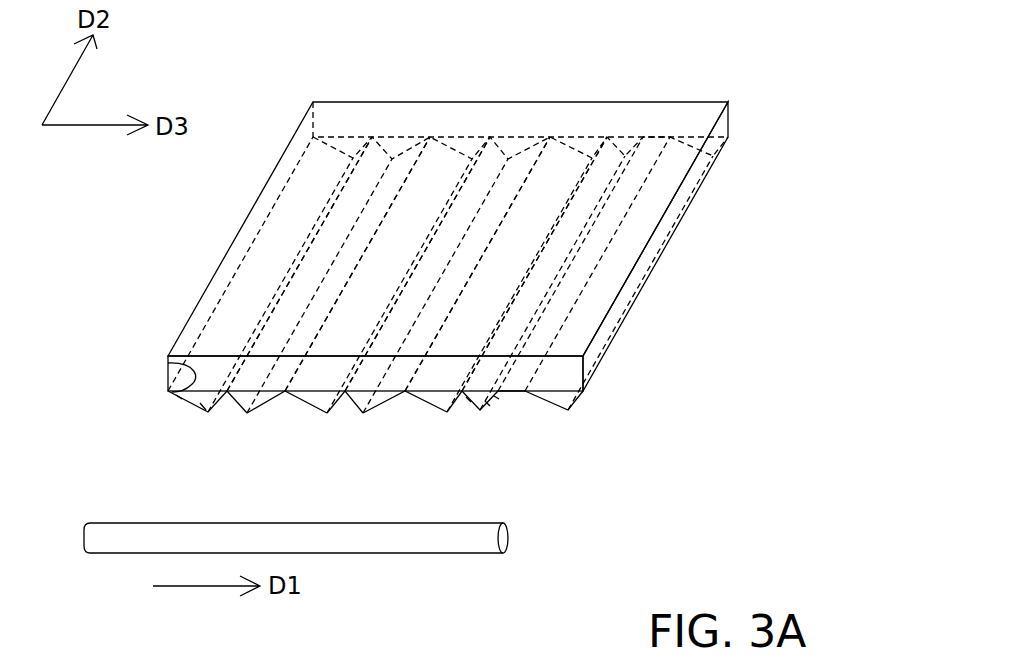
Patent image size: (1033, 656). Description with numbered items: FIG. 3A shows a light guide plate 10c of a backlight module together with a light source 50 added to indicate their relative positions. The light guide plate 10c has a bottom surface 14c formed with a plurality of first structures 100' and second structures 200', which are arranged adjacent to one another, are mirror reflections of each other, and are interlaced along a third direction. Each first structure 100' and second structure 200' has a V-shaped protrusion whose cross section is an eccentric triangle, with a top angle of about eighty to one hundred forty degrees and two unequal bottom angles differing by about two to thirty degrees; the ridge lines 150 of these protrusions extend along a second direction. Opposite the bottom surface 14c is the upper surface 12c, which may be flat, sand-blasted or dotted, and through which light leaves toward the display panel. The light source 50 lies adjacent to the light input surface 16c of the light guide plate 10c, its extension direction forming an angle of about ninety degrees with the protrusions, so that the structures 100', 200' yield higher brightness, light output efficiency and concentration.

The light guide plate 10c is at (472, 239).
The upper surface 12c is at (643, 123).
The bottom surface 14c is at (656, 264).
The light incident surface 16c is at (563, 371).
The ridge line of microstructure 150 is at (515, 145).
The first structure 100' is at (338, 428).
The second structure 200' is at (403, 432).
The light source 50 is at (508, 538).